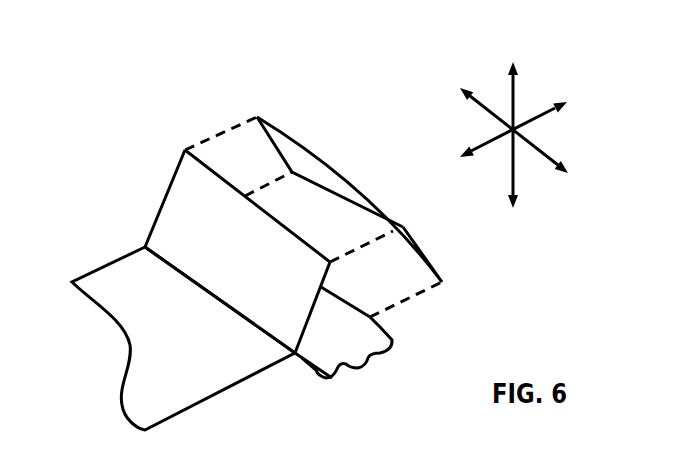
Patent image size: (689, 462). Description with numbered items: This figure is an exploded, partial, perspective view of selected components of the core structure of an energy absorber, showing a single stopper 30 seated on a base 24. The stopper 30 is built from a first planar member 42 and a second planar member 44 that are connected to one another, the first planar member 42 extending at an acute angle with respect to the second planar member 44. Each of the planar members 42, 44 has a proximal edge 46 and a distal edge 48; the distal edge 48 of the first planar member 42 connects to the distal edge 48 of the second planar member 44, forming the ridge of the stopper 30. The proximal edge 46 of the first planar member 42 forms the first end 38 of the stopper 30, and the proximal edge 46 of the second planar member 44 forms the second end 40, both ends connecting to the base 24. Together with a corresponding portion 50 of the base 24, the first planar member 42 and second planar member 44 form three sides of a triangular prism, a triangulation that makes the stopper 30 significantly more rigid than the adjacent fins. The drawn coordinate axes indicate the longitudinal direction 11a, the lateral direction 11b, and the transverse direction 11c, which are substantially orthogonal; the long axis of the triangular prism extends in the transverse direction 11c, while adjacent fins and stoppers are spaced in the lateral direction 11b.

The longitudinal direction 11a is at (510, 97).
The lateral direction 11b is at (470, 148).
The transverse direction 11c is at (553, 152).
The base 24 is at (100, 280).
The stopper 30 is at (135, 207).
The first end 38 is at (223, 288).
The second end 40 is at (418, 260).
The first planar member 42 is at (253, 267).
The second planar member 44 is at (329, 185).
The proximal edge 46 is at (245, 325).
The distal edge 48 is at (229, 170).
The portion of the base 50 is at (368, 366).